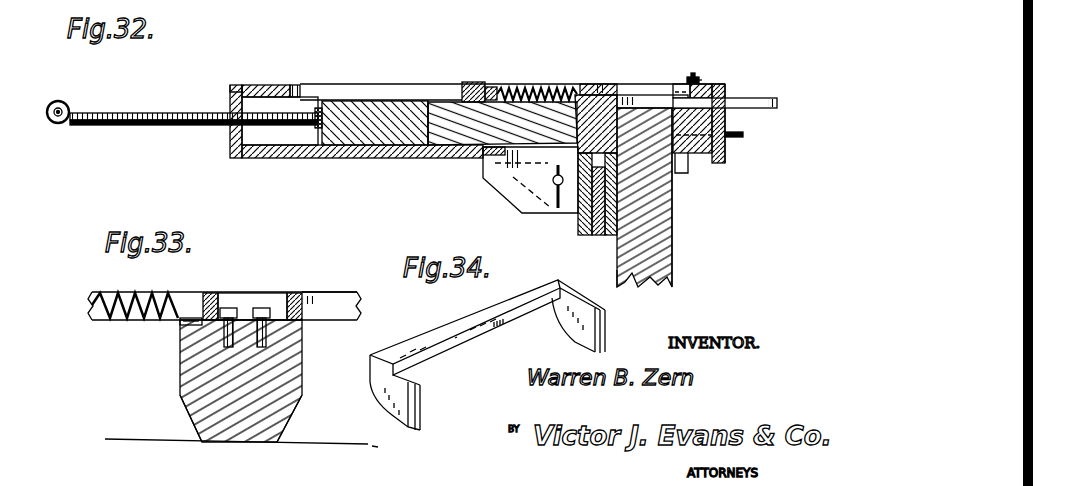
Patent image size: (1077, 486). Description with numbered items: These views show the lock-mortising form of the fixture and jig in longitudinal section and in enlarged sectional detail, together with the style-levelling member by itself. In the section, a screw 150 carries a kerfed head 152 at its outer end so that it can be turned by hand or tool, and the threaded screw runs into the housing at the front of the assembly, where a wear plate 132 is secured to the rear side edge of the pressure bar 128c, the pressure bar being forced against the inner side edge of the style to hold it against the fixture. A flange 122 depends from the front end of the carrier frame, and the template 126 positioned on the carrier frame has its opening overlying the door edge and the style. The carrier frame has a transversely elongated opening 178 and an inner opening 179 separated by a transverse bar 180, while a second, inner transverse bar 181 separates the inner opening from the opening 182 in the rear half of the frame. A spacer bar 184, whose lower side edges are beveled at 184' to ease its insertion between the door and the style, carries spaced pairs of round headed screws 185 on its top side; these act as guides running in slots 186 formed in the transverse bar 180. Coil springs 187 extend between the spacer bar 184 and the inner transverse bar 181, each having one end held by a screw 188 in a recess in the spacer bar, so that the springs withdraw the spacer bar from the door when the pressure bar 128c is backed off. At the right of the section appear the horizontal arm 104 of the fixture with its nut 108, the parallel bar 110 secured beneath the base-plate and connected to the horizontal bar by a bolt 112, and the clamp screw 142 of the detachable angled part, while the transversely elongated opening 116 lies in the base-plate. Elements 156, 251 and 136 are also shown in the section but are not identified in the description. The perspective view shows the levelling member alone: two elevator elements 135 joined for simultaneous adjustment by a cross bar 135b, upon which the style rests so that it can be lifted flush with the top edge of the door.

In FIG. 32, the kerfed head 152 is at (54, 123).
In FIG. 32, the screw 150 is at (107, 124).
In FIG. 32, the flange 122 is at (230, 137).
In FIG. 32, the wear plate 132 is at (233, 84).
In FIG. 32, the template 126 is at (258, 85).
In FIG. 32, the nut 156 is at (313, 132).
In FIG. 32, the transversely elongated opening 116 is at (308, 159).
In FIG. 32, the pressure bar 128c is at (372, 137).
In FIG. 33, the pressure bar 128c is at (95, 303).
In FIG. 32, the opening 182 is at (378, 101).
In FIG. 32, the second transverse bar 181 is at (477, 82).
In FIG. 32, the coil springs 187 is at (523, 92).
In FIG. 33, the coil springs 187 is at (120, 290).
In FIG. 32, the transverse bar 180 is at (605, 84).
In FIG. 33, the transverse bar 180 is at (302, 300).
In FIG. 32, the spacer bar 184 is at (649, 174).
In FIG. 33, the spacer bar 184 is at (200, 381).
In FIG. 32, the beveled lower side edges 184' is at (695, 197).
In FIG. 33, the beveled lower side edges 184' is at (233, 418).
In FIG. 32, the trigger housing 251 is at (605, 215).
In FIG. 32, the nut 108 is at (688, 173).
In FIG. 32, the horizontal arm 104 is at (768, 98).
In FIG. 32, the end wall 136 is at (727, 157).
In FIG. 32, the clamp screw 142 is at (743, 128).
In FIG. 32, the parallel bar 110 is at (692, 76).
In FIG. 32, the bolt 112 is at (695, 82).
In FIG. 33, the screw 188 is at (190, 311).
In FIG. 33, the inner opening 179 is at (185, 305).
In FIG. 33, the round headed screws 185 is at (253, 308).
In FIG. 33, the slots 186 is at (277, 304).
In FIG. 33, the opening 178 is at (340, 321).
In FIG. 34, the cross bar 135b is at (453, 326).
In FIG. 34, the elevator element 135 is at (410, 426).